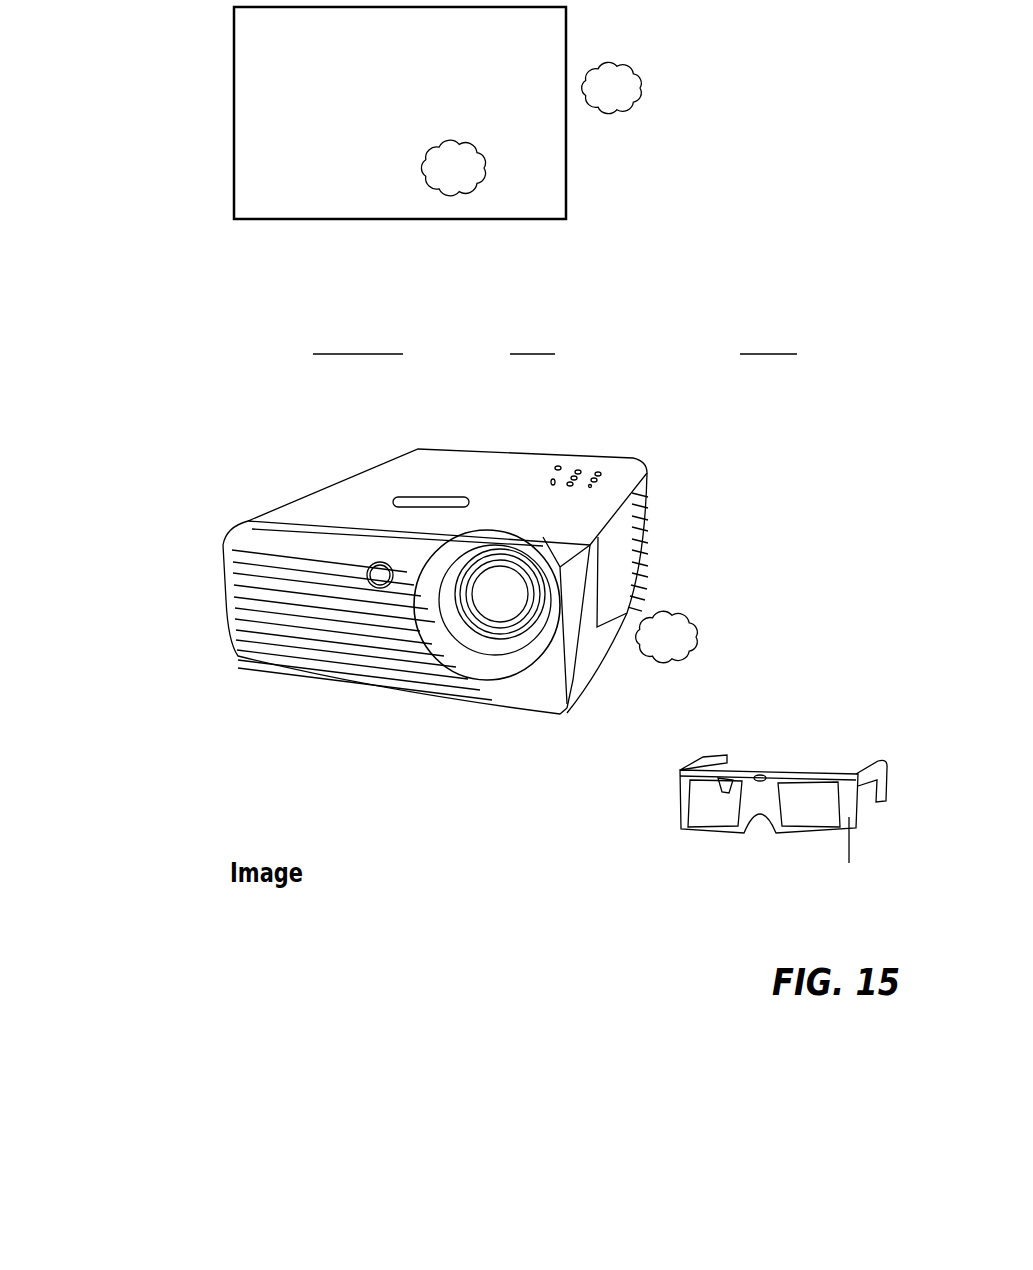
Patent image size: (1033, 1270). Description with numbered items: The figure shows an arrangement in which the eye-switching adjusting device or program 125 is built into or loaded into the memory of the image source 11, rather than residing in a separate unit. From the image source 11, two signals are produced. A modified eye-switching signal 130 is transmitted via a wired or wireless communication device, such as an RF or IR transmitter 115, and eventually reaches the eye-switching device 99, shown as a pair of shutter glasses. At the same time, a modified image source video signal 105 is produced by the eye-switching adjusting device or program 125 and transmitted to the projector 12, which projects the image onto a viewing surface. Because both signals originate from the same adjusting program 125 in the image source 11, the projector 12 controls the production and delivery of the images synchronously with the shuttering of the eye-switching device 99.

The image source 11 is at (234, 48).
The eye-switching adjusting device or program 125 is at (448, 163).
The RF or IR transmitter 115 is at (640, 362).
The modified image source video signal 105 is at (403, 262).
The modified eye-switching signal 130 is at (510, 262).
The projector 12 is at (248, 528).
The eye-switching device 99 is at (850, 770).